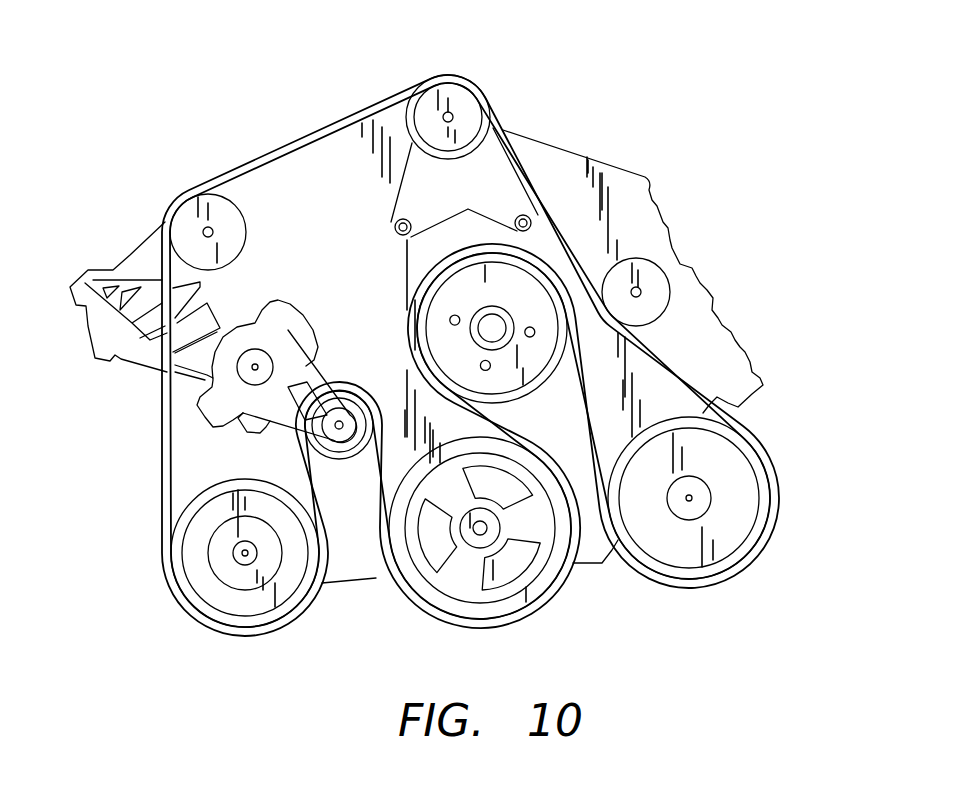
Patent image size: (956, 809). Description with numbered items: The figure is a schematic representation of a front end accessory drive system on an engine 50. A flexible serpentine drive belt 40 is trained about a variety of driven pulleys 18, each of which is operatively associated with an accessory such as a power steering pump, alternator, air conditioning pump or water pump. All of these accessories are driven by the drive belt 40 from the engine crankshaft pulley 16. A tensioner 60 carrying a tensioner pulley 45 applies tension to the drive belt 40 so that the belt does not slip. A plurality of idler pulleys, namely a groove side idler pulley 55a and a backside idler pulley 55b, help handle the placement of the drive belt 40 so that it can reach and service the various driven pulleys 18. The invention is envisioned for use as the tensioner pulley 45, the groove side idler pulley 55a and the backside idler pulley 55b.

The engine crankshaft pulley 16 is at (438, 597).
The driven pulleys 18 is at (463, 100).
The flexible serpentine drive belt 40 is at (305, 133).
The tensioner pulley 45 is at (352, 402).
The engine 50 is at (626, 133).
The groove side idler pulley 55a is at (195, 210).
The backside idler pulley 55b is at (653, 280).
The tensioner 60 is at (330, 328).